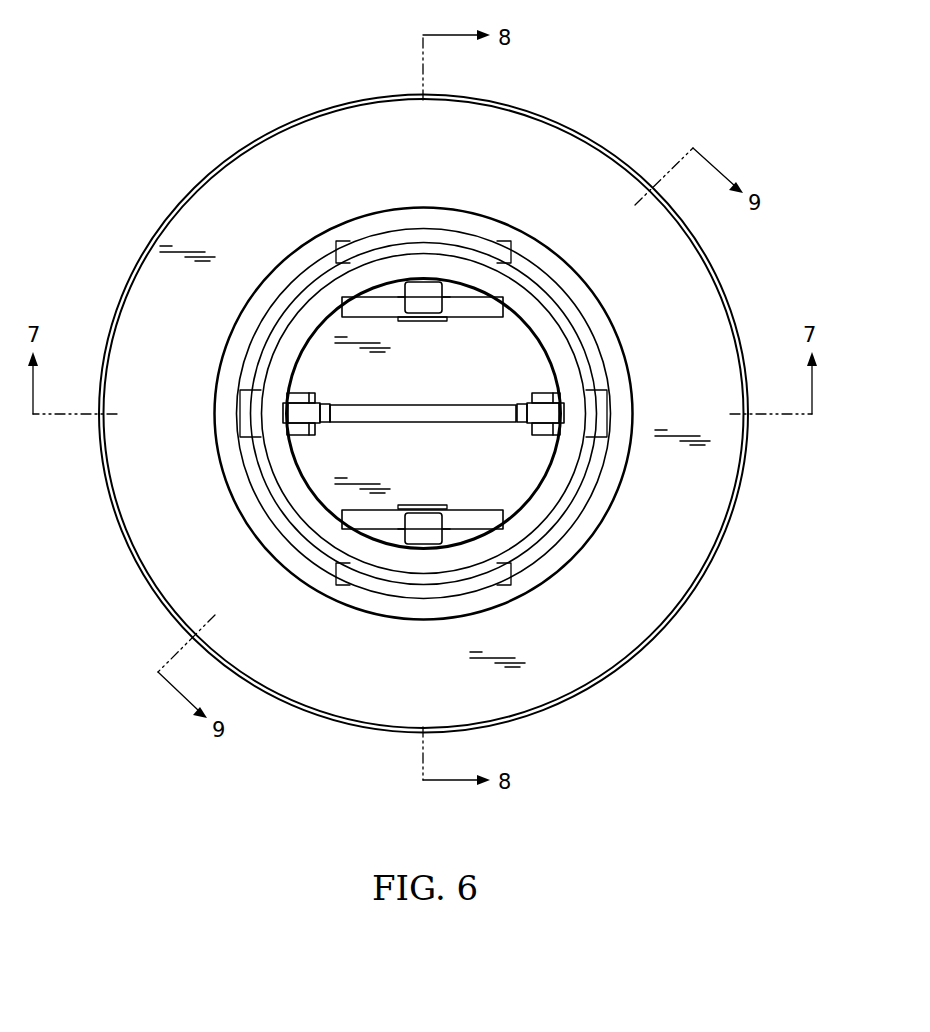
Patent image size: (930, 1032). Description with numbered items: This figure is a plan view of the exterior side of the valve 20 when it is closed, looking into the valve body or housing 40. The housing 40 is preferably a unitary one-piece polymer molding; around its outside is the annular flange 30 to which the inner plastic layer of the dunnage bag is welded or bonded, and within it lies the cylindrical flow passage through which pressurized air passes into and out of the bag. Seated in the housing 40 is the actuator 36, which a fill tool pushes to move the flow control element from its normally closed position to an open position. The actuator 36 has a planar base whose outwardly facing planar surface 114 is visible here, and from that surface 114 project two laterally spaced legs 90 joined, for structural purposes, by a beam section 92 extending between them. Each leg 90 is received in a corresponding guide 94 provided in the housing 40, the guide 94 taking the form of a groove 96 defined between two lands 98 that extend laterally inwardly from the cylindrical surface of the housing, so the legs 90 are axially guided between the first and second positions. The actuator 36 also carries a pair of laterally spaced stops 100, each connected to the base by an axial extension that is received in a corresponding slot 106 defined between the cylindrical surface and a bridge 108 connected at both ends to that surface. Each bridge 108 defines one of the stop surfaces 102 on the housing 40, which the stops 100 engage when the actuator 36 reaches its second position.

The valve 20 is at (176, 147).
The annular flange 30 is at (206, 557).
The actuator 36 is at (527, 348).
The valve body or housing 40 is at (163, 204).
The legs 90 is at (298, 343).
The beam section 92 is at (414, 405).
The guide 94 is at (519, 431).
The groove 96 is at (276, 410).
The lands 98 is at (300, 390).
The stops 100 is at (432, 303).
The stop surfaces 102 is at (370, 305).
The slot 106 is at (466, 288).
The bridge 108 is at (500, 305).
The outwardly facing planar surface 114 is at (505, 364).